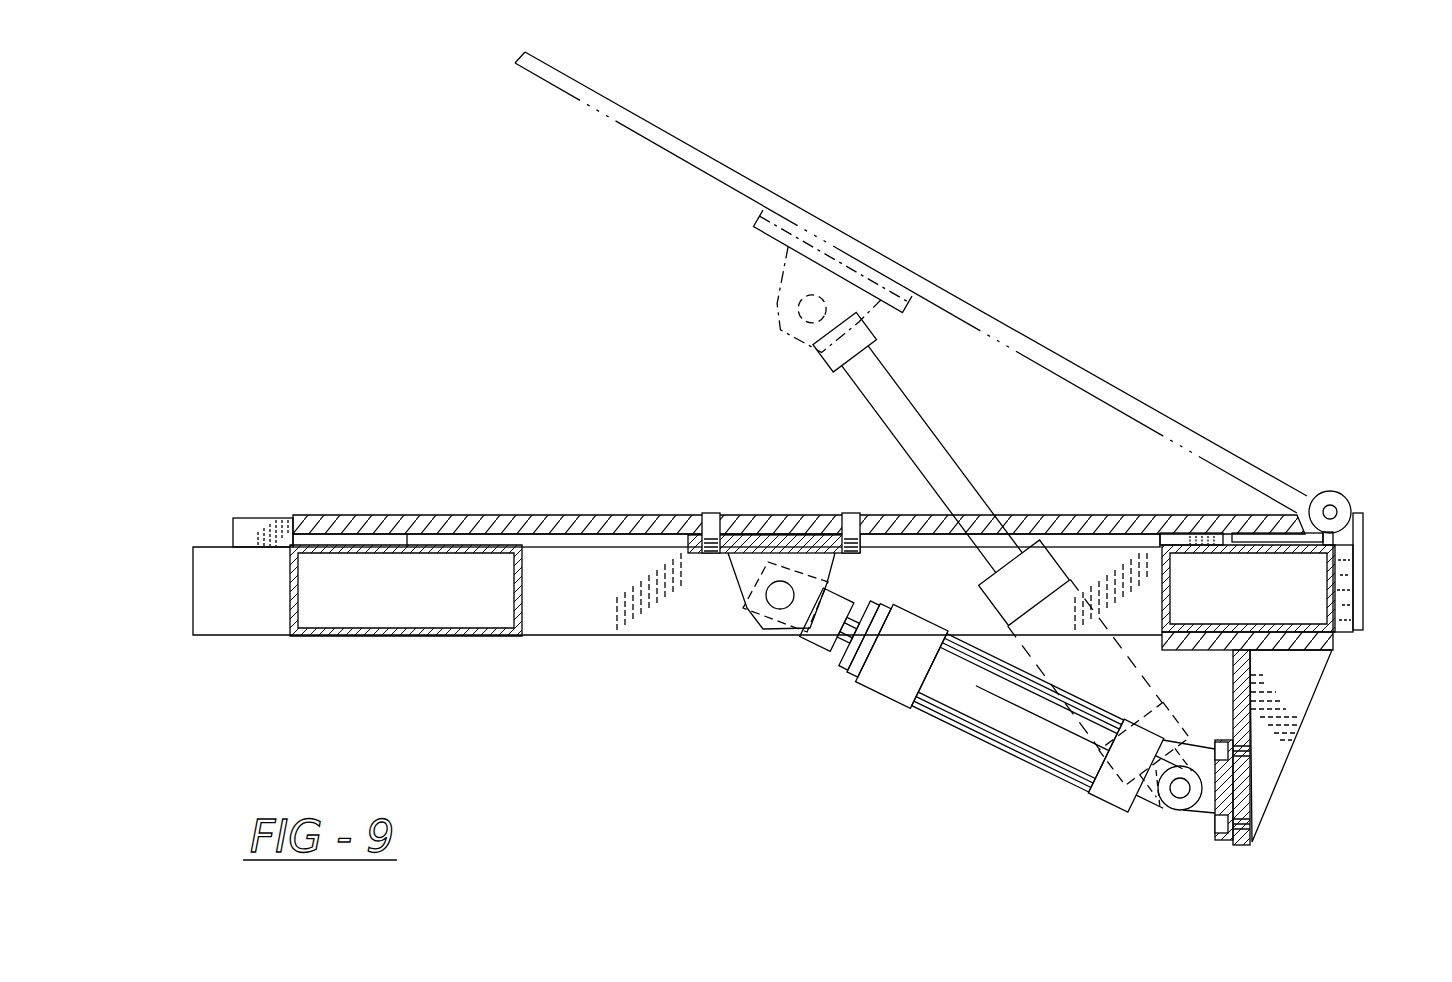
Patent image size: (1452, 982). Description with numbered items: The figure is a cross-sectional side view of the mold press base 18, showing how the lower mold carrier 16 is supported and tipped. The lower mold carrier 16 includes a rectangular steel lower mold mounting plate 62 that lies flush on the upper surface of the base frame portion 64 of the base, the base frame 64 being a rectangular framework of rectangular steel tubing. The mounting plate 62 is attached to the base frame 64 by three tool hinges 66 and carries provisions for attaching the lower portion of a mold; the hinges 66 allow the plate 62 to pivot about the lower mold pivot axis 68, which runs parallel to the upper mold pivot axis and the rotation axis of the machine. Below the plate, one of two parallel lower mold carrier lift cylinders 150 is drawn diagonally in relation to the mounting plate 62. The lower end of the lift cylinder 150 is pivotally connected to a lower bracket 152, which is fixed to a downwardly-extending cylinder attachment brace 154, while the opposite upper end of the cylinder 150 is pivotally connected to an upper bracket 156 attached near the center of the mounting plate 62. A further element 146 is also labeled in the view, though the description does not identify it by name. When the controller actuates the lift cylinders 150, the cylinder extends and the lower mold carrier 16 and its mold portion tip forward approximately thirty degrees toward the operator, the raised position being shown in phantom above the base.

The lower mold carrier 16 is at (398, 514).
The mold press base 18 is at (600, 642).
The lower mold mounting plate 62 is at (497, 525).
The base frame portion 64 is at (222, 565).
The tool hinges 66 is at (1322, 486).
The lower mold pivot axis 68 is at (1350, 500).
The actuator assembly 146 is at (999, 580).
The lower mold carrier lift cylinders 150 is at (940, 693).
The lower brackets 152 is at (1200, 815).
The cylinder attachment braces 154 is at (1310, 684).
The upper brackets 156 is at (800, 616).